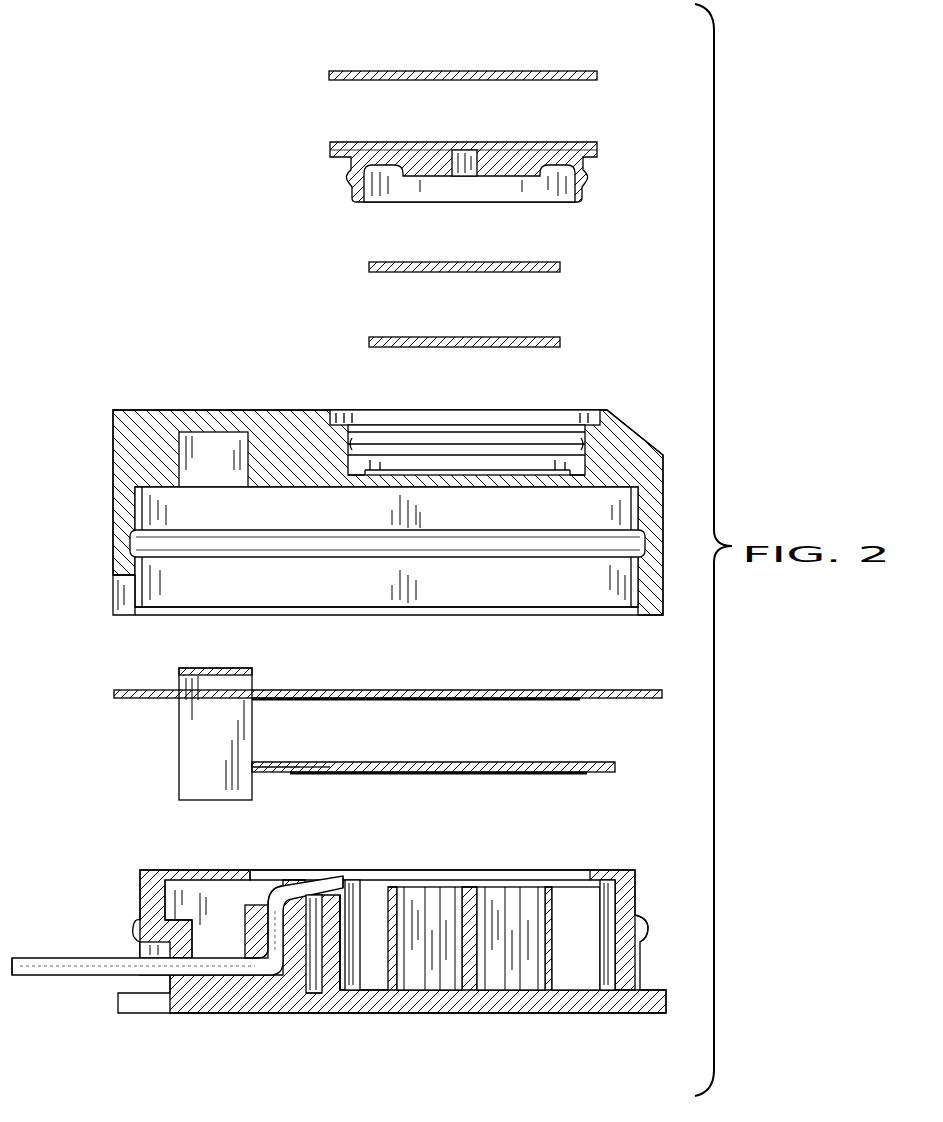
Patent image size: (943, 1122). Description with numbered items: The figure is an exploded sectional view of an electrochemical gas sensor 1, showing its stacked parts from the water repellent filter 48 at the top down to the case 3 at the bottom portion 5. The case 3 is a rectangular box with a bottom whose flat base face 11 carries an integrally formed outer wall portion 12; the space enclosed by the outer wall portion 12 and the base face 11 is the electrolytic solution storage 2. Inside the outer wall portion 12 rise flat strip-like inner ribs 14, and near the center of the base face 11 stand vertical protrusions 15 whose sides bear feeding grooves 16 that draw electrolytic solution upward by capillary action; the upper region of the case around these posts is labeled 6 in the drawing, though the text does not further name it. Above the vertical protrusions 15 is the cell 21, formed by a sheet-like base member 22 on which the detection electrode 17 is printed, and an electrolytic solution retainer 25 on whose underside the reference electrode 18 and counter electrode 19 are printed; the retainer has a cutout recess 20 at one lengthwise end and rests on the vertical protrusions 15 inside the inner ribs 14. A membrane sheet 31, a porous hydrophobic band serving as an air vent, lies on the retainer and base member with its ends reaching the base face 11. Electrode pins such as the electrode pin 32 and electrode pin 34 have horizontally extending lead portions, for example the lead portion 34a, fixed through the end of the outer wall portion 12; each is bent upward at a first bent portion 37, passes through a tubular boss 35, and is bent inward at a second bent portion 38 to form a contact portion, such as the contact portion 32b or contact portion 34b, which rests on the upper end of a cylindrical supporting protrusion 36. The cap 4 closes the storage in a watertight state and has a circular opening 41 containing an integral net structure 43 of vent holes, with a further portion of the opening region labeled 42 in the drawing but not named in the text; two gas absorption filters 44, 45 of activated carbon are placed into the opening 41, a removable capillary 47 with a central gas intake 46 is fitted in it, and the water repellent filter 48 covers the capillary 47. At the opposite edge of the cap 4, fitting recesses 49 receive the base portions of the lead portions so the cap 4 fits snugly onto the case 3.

The electrochemical gas sensor 1 is at (152, 196).
The electrolytic solution storage 2 is at (568, 895).
The case 3 is at (639, 870).
The cap 4 is at (638, 421).
The bottom portion 5 is at (441, 1013).
The upper opening 6 is at (452, 870).
The base face 11 is at (600, 978).
The outer wall portion 12 is at (642, 893).
The inner rib 14 is at (358, 887).
The vertical protrusion 15 is at (408, 887).
The feeding groove 16 is at (422, 975).
The detection electrode 17 is at (477, 702).
The reference electrode 18 is at (400, 776).
The counter electrode 19 is at (467, 776).
The cutout recess 20 is at (318, 773).
The cell 21 is at (672, 673).
The base member 22 is at (599, 689).
The electrolytic solution retainer 25 is at (599, 762).
The membrane sheet 31 is at (215, 667).
The electrode pin 32 is at (312, 992).
The contact portion 32b is at (318, 995).
The electrode pin 34 is at (310, 880).
The lead portion 34a is at (40, 976).
The contact portion 34b is at (328, 876).
The boss 35 is at (246, 955).
The supporting protrusion 36 is at (343, 990).
The first bent portion 37 is at (290, 935).
The second bent portion 38 is at (268, 890).
The opening 41 is at (578, 428).
The recess step 42 is at (492, 478).
The net structure 43 is at (532, 470).
The gas absorption filter 44 is at (529, 337).
The gas absorption filter 45 is at (522, 262).
The gas intake 46 is at (470, 152).
The capillary 47 is at (553, 143).
The water repellent filter 48 is at (566, 72).
The fitting recess 49 is at (120, 594).